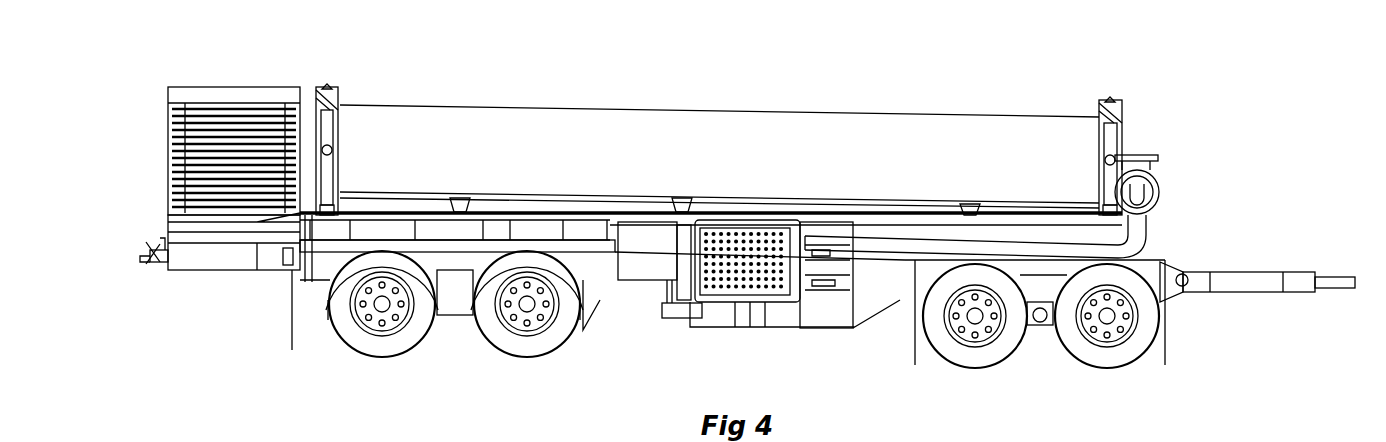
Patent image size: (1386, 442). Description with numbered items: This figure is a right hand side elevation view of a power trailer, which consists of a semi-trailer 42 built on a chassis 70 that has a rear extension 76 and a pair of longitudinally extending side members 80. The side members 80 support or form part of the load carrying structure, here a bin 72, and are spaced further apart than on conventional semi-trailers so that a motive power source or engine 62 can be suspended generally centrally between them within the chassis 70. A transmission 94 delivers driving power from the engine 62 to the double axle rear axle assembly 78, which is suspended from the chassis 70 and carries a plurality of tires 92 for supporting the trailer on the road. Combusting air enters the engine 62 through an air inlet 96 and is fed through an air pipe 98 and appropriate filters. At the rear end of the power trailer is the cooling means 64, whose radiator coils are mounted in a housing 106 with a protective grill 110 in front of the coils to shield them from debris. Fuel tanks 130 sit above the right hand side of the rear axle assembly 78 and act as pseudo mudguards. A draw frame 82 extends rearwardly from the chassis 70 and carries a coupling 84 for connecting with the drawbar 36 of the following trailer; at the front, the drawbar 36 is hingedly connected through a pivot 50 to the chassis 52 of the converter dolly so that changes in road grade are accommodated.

The drawbar 36 is at (1250, 274).
The semi-trailer 42 is at (1013, 100).
The pivot 50 is at (1190, 270).
The chassis of the converter dolly 52 is at (1152, 270).
The engine 62 is at (780, 318).
The cooling means 64 is at (314, 95).
The chassis 70 is at (682, 205).
The bin 72 is at (852, 138).
The rear extension 76 is at (222, 258).
The rear axle assembly 78 is at (458, 333).
The side members 80 is at (686, 262).
The draw frame 82 is at (156, 246).
The coupling 84 is at (160, 266).
The tires 92 is at (362, 328).
The transmission 94 is at (655, 290).
The air inlet 96 is at (1142, 155).
The air pipe 98 is at (930, 240).
The housing 106 is at (216, 87).
The grill 110 is at (248, 118).
The fuel tanks 130 is at (445, 218).